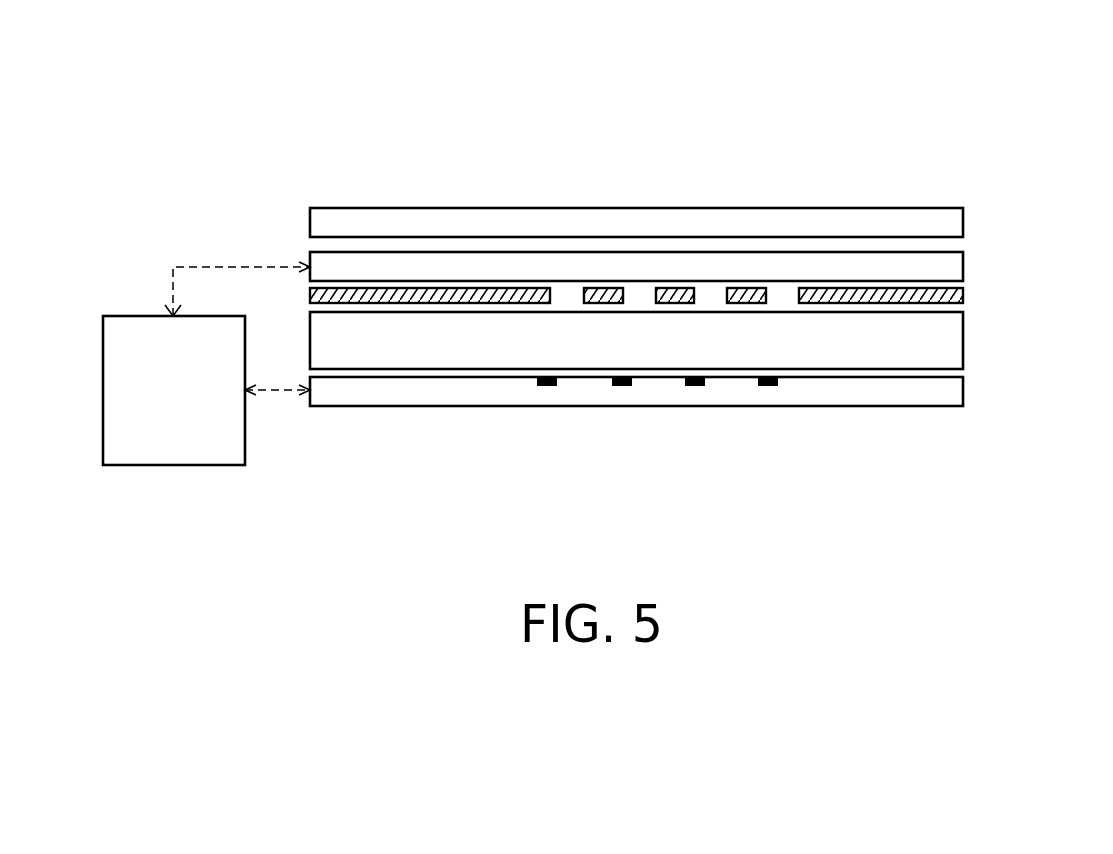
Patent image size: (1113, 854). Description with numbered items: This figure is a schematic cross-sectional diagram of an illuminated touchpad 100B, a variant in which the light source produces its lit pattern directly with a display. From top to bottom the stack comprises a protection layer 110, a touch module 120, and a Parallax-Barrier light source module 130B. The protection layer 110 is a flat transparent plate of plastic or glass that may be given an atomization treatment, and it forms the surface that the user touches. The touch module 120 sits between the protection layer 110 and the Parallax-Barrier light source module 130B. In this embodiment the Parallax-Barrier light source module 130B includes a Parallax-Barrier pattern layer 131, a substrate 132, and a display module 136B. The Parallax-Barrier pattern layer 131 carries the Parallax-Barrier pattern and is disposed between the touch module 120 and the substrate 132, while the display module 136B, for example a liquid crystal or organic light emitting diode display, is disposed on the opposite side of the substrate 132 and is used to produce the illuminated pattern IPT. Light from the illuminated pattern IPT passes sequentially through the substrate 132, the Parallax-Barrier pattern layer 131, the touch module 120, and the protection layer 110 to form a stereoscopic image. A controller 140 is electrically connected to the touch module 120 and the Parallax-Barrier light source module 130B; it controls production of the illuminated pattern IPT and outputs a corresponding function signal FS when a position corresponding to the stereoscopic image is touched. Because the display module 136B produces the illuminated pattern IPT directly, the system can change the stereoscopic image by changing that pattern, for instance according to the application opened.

The illuminated touchpad 100B is at (1105, 553).
The protection layer 110 is at (957, 223).
The touch module 120 is at (957, 267).
The Parallax-Barrier light source module 130B is at (121, 52).
The Parallax-Barrier pattern layer 131 is at (957, 296).
The substrate 132 is at (957, 344).
The display module 136B is at (685, 429).
The controller 140 is at (175, 466).
The function signal FS is at (237, 310).
The illuminated pattern IPT is at (768, 388).